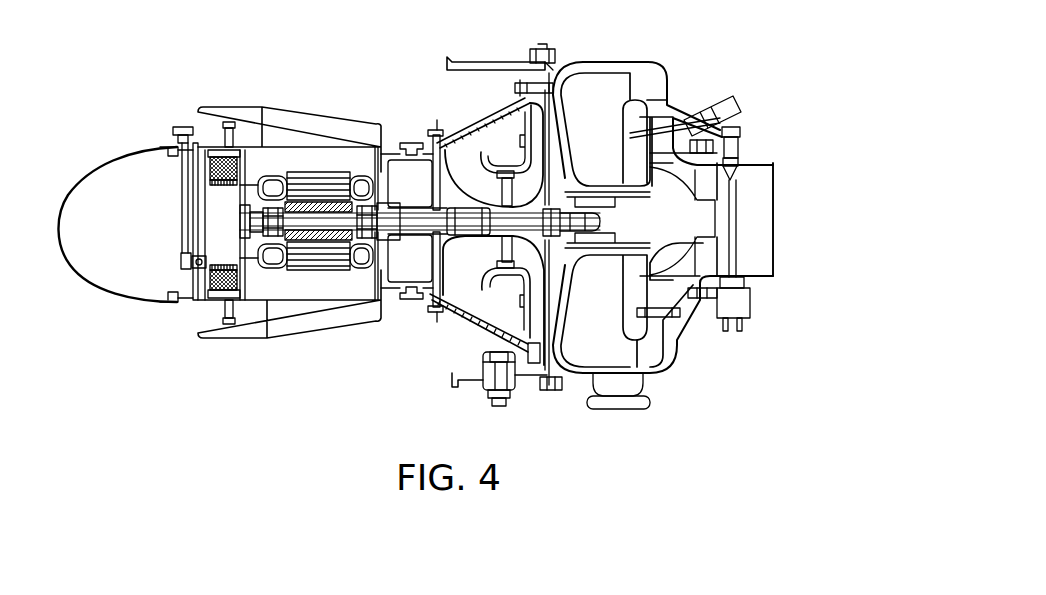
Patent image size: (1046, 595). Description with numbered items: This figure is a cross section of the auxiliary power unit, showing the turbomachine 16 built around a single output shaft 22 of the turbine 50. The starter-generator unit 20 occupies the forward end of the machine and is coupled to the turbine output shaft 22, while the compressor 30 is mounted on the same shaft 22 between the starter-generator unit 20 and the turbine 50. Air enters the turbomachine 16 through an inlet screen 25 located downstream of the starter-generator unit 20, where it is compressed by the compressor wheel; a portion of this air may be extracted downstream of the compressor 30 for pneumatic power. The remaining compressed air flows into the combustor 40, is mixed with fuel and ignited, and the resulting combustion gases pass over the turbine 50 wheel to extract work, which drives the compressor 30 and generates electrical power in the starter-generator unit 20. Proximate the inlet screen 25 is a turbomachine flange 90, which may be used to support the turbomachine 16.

The turbomachine 16 is at (789, 190).
The starter-generator unit 20 is at (306, 110).
The output shaft 22 is at (540, 213).
The inlet screen 25 is at (463, 310).
The compressor 30 is at (483, 128).
The combustor 40 is at (600, 90).
The turbine 50 is at (707, 247).
The turbomachine flange 90 is at (487, 66).